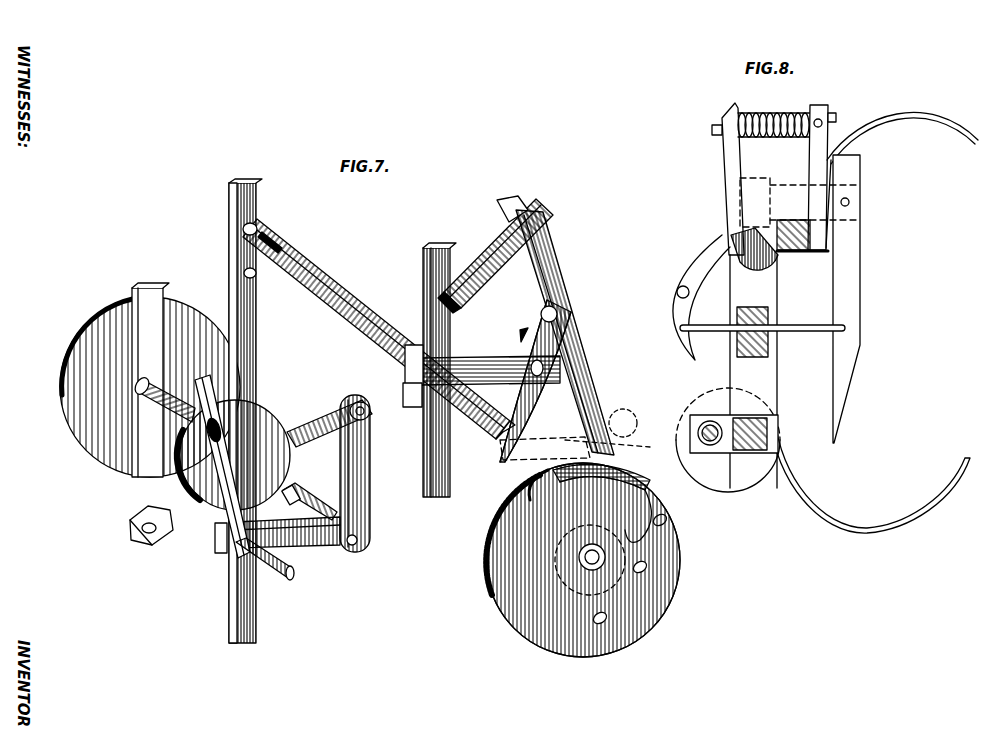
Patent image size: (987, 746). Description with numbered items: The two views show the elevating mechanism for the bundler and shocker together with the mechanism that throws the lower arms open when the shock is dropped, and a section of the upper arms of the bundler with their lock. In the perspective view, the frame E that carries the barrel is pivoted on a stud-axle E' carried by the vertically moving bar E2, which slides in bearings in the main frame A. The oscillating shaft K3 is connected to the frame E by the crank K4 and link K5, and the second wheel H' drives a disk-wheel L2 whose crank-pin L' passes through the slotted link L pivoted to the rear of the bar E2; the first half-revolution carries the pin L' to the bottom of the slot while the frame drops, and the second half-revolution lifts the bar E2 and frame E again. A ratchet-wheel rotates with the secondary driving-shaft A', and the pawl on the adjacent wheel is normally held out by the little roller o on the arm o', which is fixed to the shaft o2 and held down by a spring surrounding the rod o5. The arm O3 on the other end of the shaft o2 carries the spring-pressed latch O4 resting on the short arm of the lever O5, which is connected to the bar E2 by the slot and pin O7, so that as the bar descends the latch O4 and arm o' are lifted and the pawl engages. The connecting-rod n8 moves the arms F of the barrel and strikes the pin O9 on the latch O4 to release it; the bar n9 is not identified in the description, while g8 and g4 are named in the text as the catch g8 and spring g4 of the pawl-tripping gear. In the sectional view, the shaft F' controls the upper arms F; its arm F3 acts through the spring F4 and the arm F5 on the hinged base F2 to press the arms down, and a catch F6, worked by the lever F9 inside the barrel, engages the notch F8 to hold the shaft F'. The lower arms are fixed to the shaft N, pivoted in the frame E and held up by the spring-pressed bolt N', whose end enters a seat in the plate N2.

In FIG. 7, the second wheel H' is at (150, 387).
In FIG. 7, the main frame A is at (305, 416).
In FIG. 7, the vertically-moving bar E2 is at (256, 352).
In FIG. 7, the lever O5 is at (360, 322).
In FIG. 7, the slot and pin O7 is at (262, 232).
In FIG. 7, the disk-wheel L2 is at (185, 478).
In FIG. 7, the crank-pin L' is at (200, 466).
In FIG. 7, the slotted link L is at (163, 407).
In FIG. 7, the link K5 is at (165, 540).
In FIG. 7, the crank K4 is at (370, 461).
In FIG. 7, the shaft K3 is at (300, 497).
In FIG. 7, the stud-axle E' is at (265, 553).
In FIG. 7, the arm O3 is at (482, 362).
In FIG. 7, the shaft o2 is at (418, 350).
In FIG. 7, the inclined bar n9 is at (495, 254).
In FIG. 7, the connecting-rod n8 is at (568, 330).
In FIG. 7, the spring-pressed latch O4 is at (535, 400).
In FIG. 7, the pin O9 is at (556, 310).
In FIG. 7, the catch g8 is at (520, 345).
In FIG. 7, the secondary driving-shaft A' is at (583, 578).
In FIG. 7, the roller o is at (610, 519).
In FIG. 7, the arm o' is at (589, 520).
In FIG. 7, the rod o5 is at (542, 485).
In FIG. 8, the arm F3 is at (728, 175).
In FIG. 8, the spring F4 is at (774, 113).
In FIG. 8, the arm F5 is at (812, 152).
In FIG. 8, the arms of the barrel F is at (874, 313).
In FIG. 8, the lever F9 is at (860, 283).
In FIG. 8, the spring g4 is at (829, 243).
In FIG. 8, the frame E is at (797, 272).
In FIG. 8, the base F2 is at (795, 250).
In FIG. 8, the notch F8 is at (733, 262).
In FIG. 8, the catch F6 is at (696, 297).
In FIG. 8, the shaft F' is at (762, 371).
In FIG. 8, the plate N2 is at (728, 440).
In FIG. 8, the shaft N is at (751, 434).
In FIG. 8, the spring-pressed bolt N' is at (693, 413).